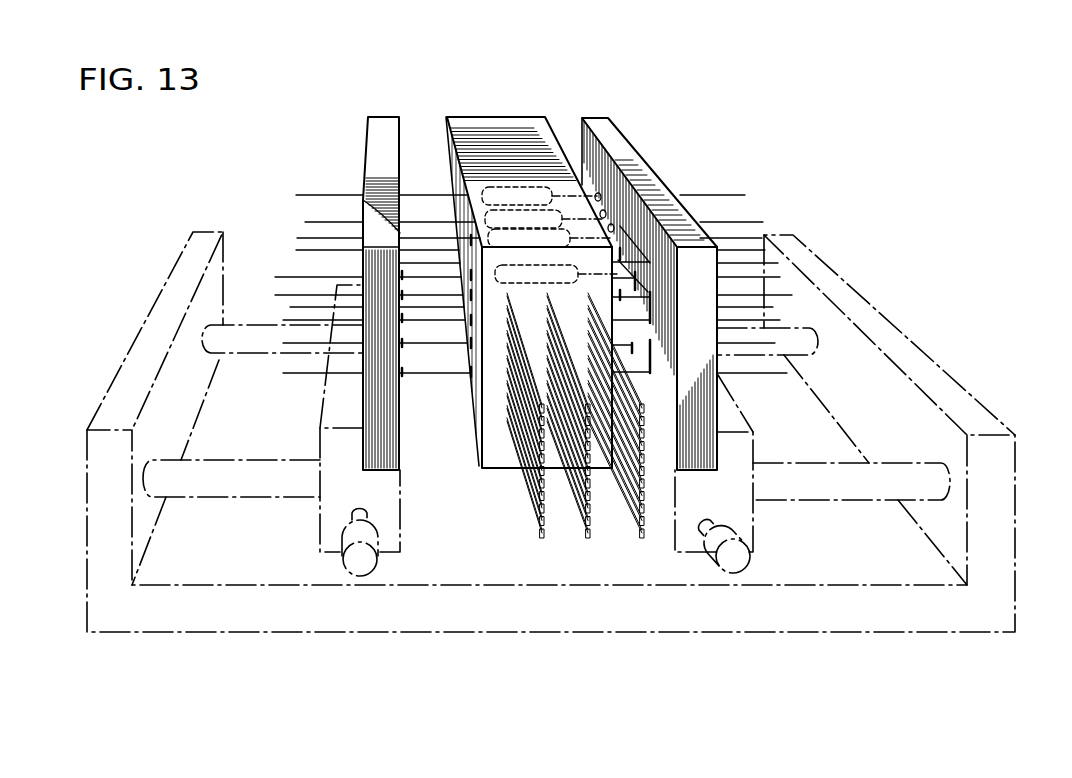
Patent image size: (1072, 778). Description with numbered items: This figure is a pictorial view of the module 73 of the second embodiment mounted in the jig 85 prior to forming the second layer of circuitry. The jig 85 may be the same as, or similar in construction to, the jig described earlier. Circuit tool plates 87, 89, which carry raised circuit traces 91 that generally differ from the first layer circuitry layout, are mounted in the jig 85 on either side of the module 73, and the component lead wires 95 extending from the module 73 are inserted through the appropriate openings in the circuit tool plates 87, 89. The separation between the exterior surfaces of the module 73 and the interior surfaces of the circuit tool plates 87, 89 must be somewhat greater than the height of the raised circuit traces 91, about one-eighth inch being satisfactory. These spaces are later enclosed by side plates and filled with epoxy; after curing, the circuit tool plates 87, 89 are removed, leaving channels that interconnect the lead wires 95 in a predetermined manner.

The jig 85 is at (767, 166).
The circuit tool plate 87 is at (383, 123).
The module 73 is at (516, 127).
The circuit tool plate 89 is at (612, 132).
The raised circuit traces 91 is at (417, 238).
The component lead wires 95 is at (362, 195).